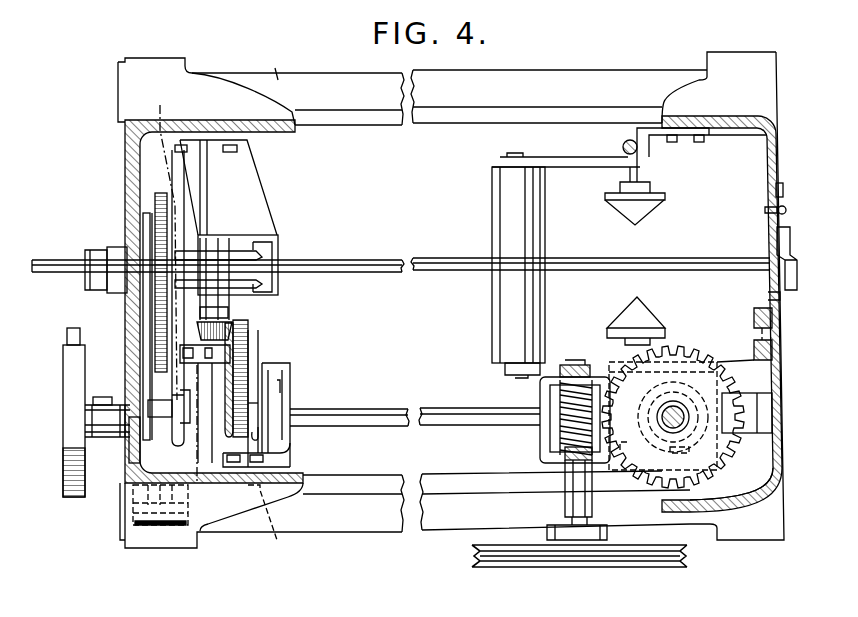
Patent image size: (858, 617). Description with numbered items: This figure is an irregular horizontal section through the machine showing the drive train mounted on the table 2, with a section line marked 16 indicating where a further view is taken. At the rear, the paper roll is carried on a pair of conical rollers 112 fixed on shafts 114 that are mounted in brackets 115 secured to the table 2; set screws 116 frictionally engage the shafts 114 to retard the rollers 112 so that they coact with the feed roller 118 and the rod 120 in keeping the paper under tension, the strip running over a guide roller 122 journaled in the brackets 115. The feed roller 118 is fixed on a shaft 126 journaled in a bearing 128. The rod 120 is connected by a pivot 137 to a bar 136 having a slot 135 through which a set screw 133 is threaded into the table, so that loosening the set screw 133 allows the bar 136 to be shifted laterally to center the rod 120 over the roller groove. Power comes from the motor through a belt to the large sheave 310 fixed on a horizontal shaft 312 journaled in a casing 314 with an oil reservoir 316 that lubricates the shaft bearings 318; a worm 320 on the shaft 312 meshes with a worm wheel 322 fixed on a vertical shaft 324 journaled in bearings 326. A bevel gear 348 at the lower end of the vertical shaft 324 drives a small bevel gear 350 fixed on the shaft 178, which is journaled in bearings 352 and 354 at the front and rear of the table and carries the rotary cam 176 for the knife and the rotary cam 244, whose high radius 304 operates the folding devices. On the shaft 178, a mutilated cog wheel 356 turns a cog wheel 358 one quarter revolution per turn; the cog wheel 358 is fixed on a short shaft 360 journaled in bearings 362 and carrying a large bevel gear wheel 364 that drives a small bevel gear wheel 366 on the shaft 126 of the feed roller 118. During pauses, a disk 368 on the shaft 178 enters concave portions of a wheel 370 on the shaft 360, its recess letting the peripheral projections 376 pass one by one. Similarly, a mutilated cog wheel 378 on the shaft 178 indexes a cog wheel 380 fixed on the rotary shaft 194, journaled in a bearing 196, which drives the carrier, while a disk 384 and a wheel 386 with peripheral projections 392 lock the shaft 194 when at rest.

The table 2 is at (451, 297).
The section line 16 is at (164, 117).
The conical rollers 112 is at (637, 297).
The shafts 114 is at (637, 173).
The brackets 115 is at (566, 163).
The set screws 116 is at (620, 147).
The feed roller 118 is at (240, 255).
The rod 120 is at (375, 272).
The guide roller 122 is at (497, 210).
The shaft 126 is at (217, 250).
The bearing 128 is at (265, 238).
The set screw 133 is at (765, 212).
The slot 135 is at (772, 197).
The bar 136 is at (779, 238).
The pivot 137 is at (775, 295).
The rotary cam 176 is at (103, 397).
The shaft 178 is at (364, 413).
The rotary shaft 194 is at (90, 258).
The bearing 196 is at (118, 287).
The rotary cam 244 is at (67, 385).
The high radius 304 is at (65, 332).
The large sheave 310 is at (528, 568).
The horizontal shaft 312 is at (565, 510).
The casing 314 is at (540, 397).
The oil reservoir 316 is at (558, 433).
The shaft bearings 318 is at (580, 351).
The worm 320 is at (563, 445).
The worm wheel 322 is at (705, 333).
The vertical shaft 324 is at (669, 403).
The bearings 326 is at (740, 480).
The bevel gear 348 is at (681, 418).
The small bevel gear 350 is at (729, 445).
The bearing 352 is at (128, 437).
The bearing 354 is at (752, 395).
The mutilated cog wheel 356 is at (243, 446).
The cog wheel 358 is at (243, 322).
The short shaft 360 is at (277, 368).
The bearings 362 is at (290, 370).
The large bevel gear wheel 364 is at (230, 347).
The small bevel gear wheel 366 is at (214, 323).
The disk 368 is at (274, 528).
The wheel 370 is at (260, 437).
The peripheral projections 376 is at (252, 403).
The mutilated cog wheel 378 is at (167, 458).
The cog wheel 380 is at (153, 200).
The disk 384 is at (150, 358).
The wheel 386 is at (147, 305).
The peripheral projections 392 is at (147, 218).